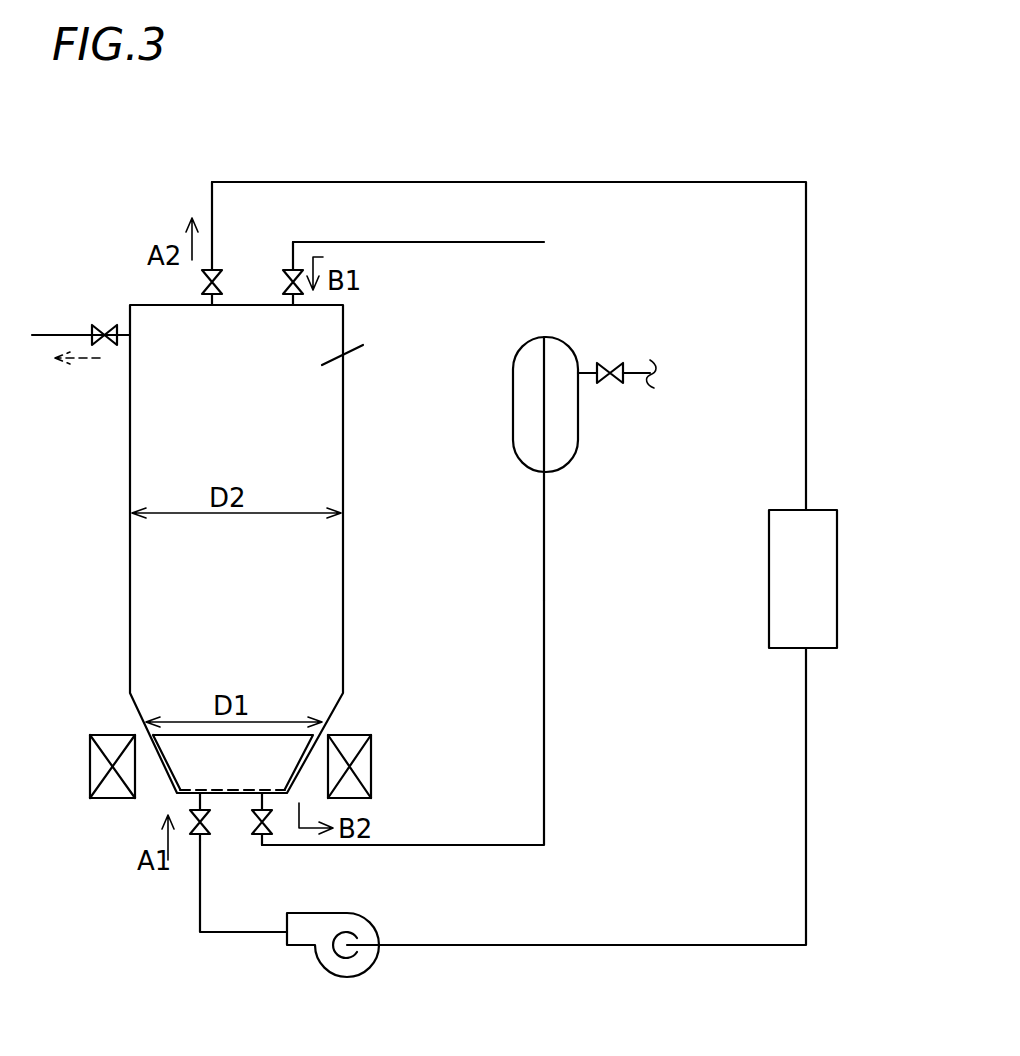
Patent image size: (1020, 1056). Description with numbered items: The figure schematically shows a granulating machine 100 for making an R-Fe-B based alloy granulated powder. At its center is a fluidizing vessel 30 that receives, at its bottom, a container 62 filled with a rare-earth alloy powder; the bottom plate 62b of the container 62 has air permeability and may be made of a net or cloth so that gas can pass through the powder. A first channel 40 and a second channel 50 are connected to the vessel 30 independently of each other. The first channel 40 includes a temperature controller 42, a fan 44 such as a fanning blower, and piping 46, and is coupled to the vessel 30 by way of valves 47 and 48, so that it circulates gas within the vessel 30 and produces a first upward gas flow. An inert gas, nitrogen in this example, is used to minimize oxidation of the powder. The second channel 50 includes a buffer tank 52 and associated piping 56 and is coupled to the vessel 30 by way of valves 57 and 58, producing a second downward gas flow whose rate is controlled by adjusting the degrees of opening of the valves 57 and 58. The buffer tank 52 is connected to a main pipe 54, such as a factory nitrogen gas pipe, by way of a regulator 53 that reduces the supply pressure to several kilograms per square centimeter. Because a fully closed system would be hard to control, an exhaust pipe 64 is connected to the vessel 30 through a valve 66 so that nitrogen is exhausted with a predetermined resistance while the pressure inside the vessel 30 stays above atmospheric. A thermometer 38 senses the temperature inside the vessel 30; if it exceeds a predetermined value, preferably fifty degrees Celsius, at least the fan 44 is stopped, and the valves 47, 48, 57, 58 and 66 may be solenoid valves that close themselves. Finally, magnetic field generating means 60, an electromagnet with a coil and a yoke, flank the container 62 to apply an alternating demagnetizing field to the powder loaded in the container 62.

The granulating machine 100 is at (700, 155).
The vessel 30 is at (130, 435).
The thermometer 38 is at (360, 363).
The first channel 40 is at (806, 350).
The temperature controller 42 is at (837, 562).
The fan 44 is at (360, 965).
The piping 46 is at (806, 440).
The valve 47 is at (193, 836).
The valve 48 is at (222, 282).
The second channel 50 is at (544, 657).
The buffer tank 52 is at (578, 415).
The regulator 53 is at (602, 362).
The main pipe 54 is at (637, 367).
The pipe 56 is at (544, 518).
The valve 57 is at (255, 836).
The valve 58 is at (283, 282).
The magnetic field generating means 60 is at (90, 768).
The container 62 is at (162, 770).
The bottom plate 62b is at (183, 800).
The exhaust pipe 64 is at (73, 335).
The valve 66 is at (108, 325).